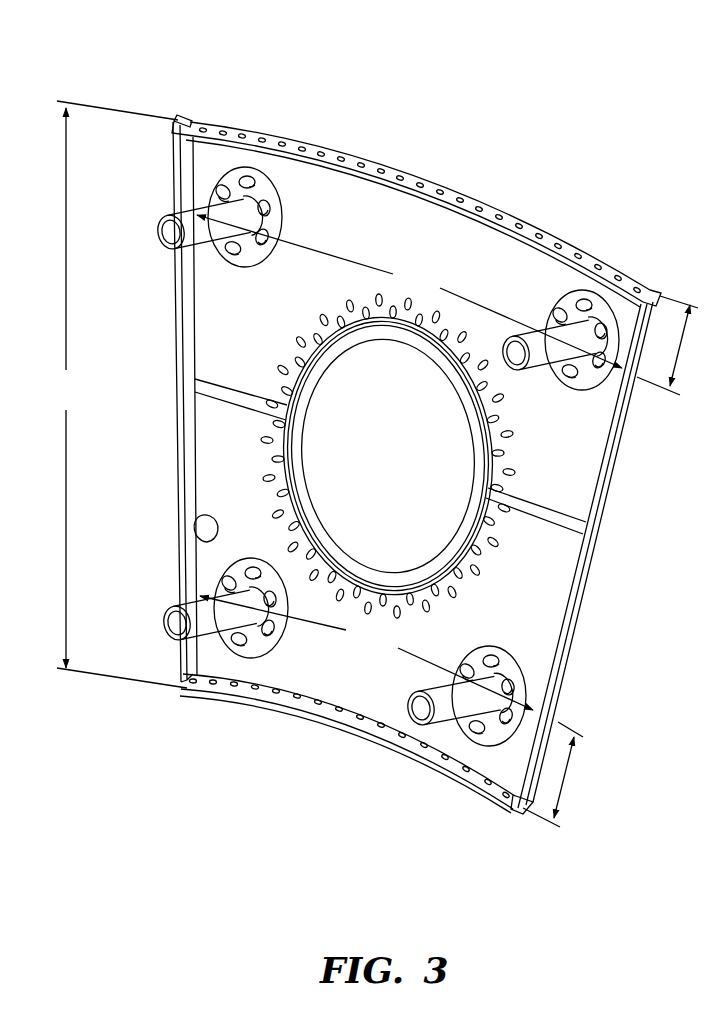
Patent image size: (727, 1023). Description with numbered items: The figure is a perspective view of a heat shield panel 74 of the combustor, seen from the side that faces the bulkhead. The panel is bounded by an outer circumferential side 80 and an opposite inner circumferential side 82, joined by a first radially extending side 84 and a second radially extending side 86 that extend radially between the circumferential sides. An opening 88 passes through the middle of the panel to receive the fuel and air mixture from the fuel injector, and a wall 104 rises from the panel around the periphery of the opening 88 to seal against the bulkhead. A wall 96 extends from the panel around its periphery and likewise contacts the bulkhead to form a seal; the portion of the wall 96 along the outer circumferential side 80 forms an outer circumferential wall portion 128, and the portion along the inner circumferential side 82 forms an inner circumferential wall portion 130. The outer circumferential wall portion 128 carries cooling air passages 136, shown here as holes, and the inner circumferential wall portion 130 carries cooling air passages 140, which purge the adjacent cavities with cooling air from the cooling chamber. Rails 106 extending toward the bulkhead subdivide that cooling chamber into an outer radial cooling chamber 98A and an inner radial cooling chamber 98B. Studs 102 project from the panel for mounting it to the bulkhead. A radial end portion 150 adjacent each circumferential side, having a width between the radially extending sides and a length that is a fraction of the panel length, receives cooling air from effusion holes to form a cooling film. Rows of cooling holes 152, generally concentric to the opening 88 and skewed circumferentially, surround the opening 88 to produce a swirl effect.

The heat shield panel 74 is at (598, 108).
The outer circumferential side 80 is at (592, 256).
The inner circumferential side 82 is at (472, 786).
The first radially extending side 84 is at (633, 440).
The second radially extending side 86 is at (172, 330).
The opening 88 is at (404, 470).
The wall 96 is at (192, 530).
The outer radial cooling chamber 98A is at (398, 240).
The inner radial cooling chamber 98B is at (333, 665).
The stud 102 is at (540, 370).
The wall 104 is at (322, 318).
The rail 106 is at (222, 405).
The outer circumferential wall portion 128 is at (263, 116).
The inner circumferential wall portion 130 is at (233, 722).
The cooling air passage 136 is at (308, 108).
The cooling air passage 140 is at (416, 782).
The radial end portion 150 is at (460, 252).
The cooling holes 152 is at (268, 377).